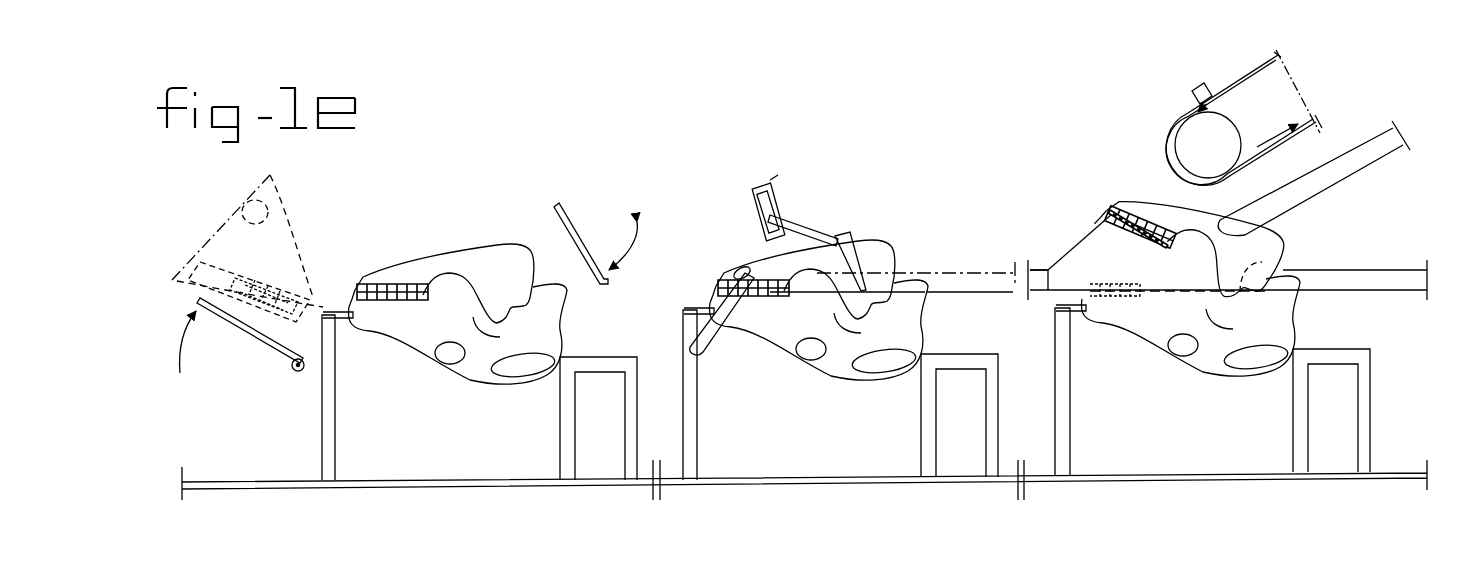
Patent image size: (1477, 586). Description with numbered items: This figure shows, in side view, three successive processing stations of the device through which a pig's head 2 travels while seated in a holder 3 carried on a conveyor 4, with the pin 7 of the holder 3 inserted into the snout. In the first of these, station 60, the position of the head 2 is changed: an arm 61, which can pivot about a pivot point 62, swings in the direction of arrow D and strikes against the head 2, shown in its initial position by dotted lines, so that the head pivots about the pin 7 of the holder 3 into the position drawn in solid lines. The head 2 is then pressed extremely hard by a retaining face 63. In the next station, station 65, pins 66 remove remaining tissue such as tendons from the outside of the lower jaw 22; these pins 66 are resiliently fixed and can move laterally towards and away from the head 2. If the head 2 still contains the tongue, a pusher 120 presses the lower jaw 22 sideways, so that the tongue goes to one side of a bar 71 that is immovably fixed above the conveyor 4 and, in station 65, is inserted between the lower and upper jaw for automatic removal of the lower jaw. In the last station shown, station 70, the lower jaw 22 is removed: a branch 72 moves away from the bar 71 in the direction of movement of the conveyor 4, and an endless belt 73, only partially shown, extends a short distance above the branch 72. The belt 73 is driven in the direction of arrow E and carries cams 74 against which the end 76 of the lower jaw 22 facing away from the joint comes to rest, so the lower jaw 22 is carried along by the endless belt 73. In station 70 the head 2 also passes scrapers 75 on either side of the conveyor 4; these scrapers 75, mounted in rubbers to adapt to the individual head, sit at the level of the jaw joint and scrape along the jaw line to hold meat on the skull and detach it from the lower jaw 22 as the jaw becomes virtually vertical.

The animal head 2 is at (478, 357).
The holder 3 is at (312, 447).
The conveyor 4 is at (812, 483).
The pin 7 is at (349, 312).
The lower jaw 22 is at (765, 255).
The station 60 is at (446, 205).
The arm 61 is at (270, 342).
The pivot point 62 is at (292, 375).
The retaining face 63 is at (570, 228).
The station 65 is at (802, 195).
The pins 66 is at (847, 238).
The station 70 is at (1093, 172).
The bar 71 is at (982, 273).
The branch 72 is at (1337, 172).
The endless belt 73 is at (1176, 155).
The cams 74 is at (1197, 85).
The scrapers 75 is at (1263, 262).
The end of the lower jaw 76 is at (1142, 213).
The pusher 120 is at (738, 360).
The arrow D is at (191, 346).
The arrow E is at (1277, 128).